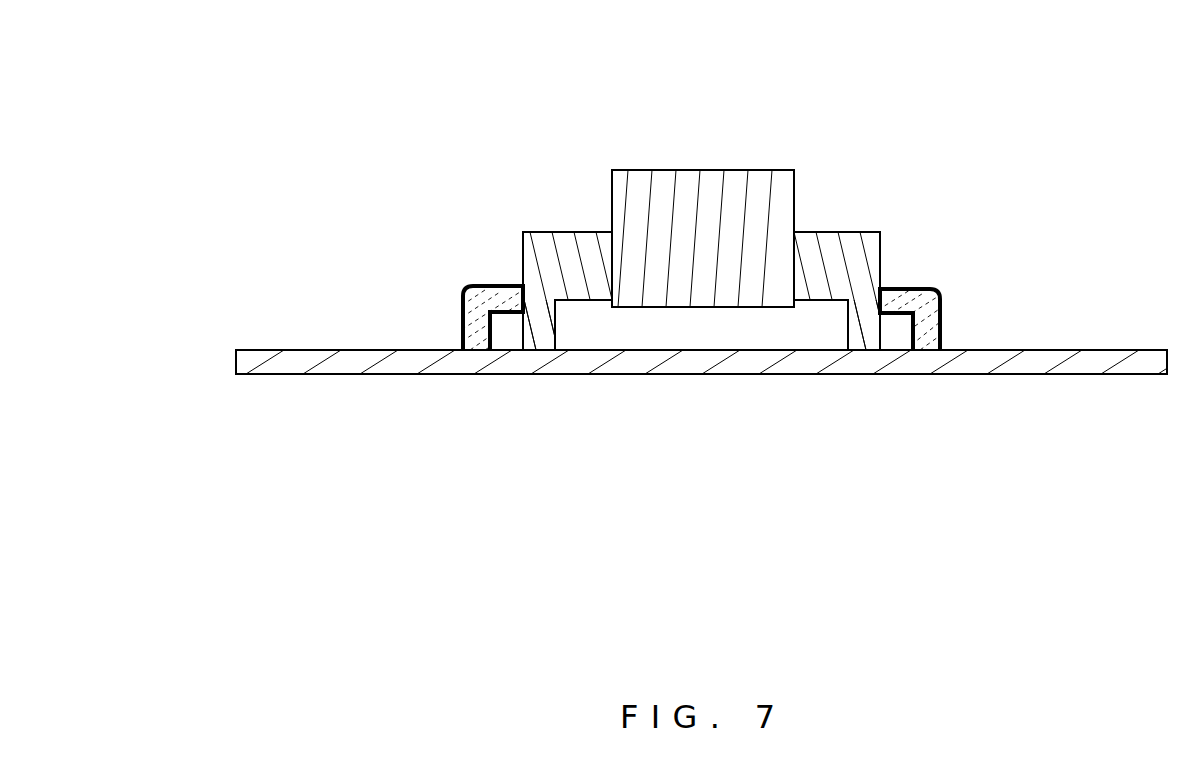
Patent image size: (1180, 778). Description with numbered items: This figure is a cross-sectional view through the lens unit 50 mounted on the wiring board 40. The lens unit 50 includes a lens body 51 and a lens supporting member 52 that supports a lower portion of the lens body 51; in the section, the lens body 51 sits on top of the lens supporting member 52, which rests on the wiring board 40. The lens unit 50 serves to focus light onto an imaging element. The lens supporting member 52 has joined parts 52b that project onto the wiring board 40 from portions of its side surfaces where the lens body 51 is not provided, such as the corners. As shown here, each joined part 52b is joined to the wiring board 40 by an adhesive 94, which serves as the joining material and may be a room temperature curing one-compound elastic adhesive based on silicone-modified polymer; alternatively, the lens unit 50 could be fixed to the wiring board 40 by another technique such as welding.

The wiring board 40 is at (309, 356).
The lens unit 50 is at (732, 275).
The lens body 51 is at (797, 176).
The lens supporting member 52 is at (852, 232).
The joined part 52b is at (503, 340).
The adhesive 94 is at (477, 300).